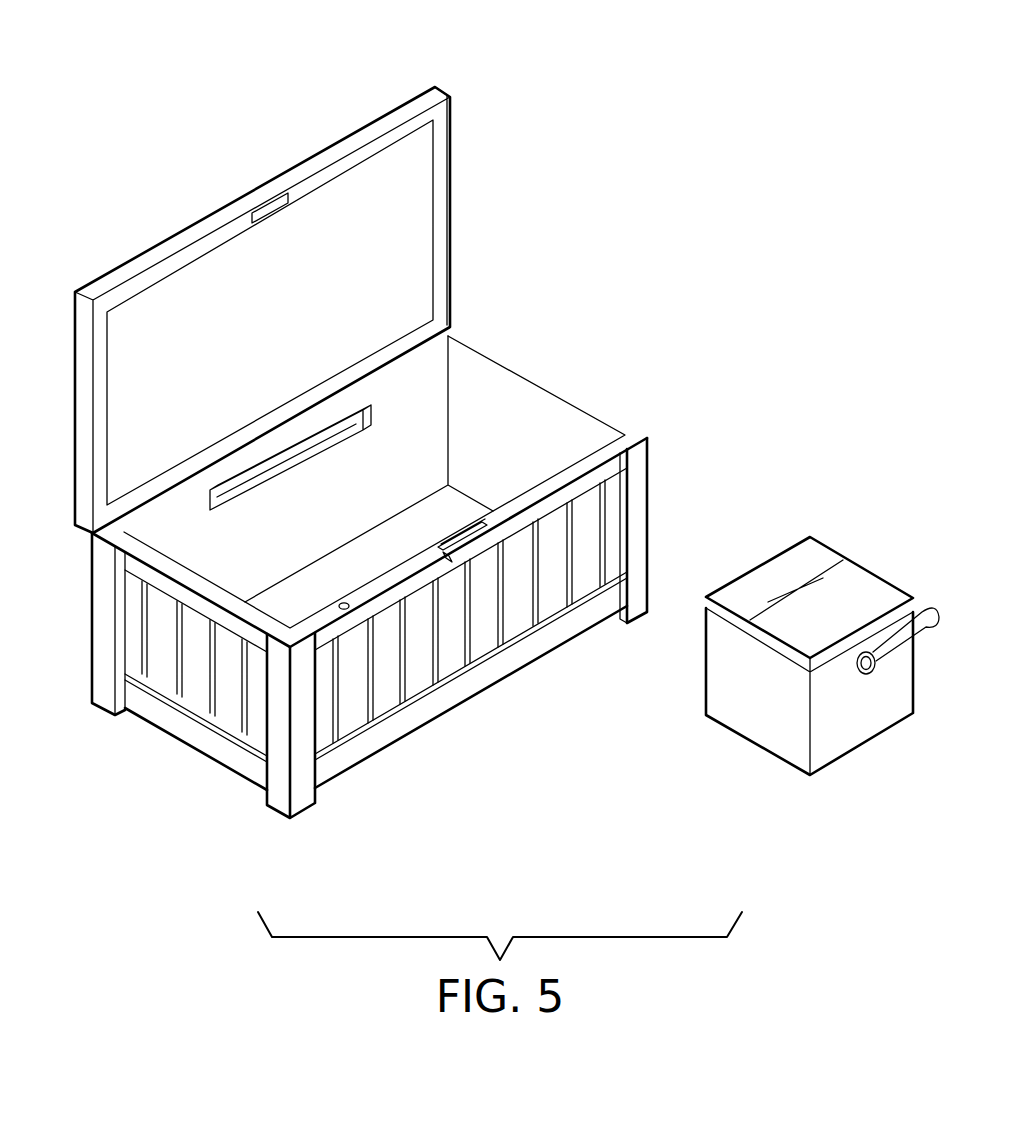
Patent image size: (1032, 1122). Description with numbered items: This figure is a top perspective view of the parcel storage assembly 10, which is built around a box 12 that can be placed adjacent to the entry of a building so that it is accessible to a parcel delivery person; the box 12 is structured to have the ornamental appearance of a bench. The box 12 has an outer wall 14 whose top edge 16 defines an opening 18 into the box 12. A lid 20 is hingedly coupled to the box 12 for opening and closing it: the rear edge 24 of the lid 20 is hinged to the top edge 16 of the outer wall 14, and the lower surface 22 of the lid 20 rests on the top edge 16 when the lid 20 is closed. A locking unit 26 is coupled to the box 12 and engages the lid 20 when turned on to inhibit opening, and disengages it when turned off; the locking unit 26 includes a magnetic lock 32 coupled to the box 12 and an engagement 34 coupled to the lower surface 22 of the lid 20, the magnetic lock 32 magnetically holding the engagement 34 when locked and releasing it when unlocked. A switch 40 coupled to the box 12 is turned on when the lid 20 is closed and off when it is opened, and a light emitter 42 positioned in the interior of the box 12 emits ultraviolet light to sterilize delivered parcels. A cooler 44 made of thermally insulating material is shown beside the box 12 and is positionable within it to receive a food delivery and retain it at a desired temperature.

The parcel storage assembly 10 is at (764, 165).
The box 12 is at (643, 463).
The outer wall 14 is at (553, 598).
The top edge 16 is at (563, 403).
The opening 18 is at (483, 424).
The lid 20 is at (445, 90).
The lower surface 22 is at (360, 192).
The rear edge 24 is at (123, 503).
The locking unit 26 is at (462, 508).
The magnetic lock 32 is at (440, 556).
The engagement 34 is at (215, 240).
The switch 40 is at (344, 612).
The light emitter 42 is at (252, 473).
The cooler 44 is at (706, 665).